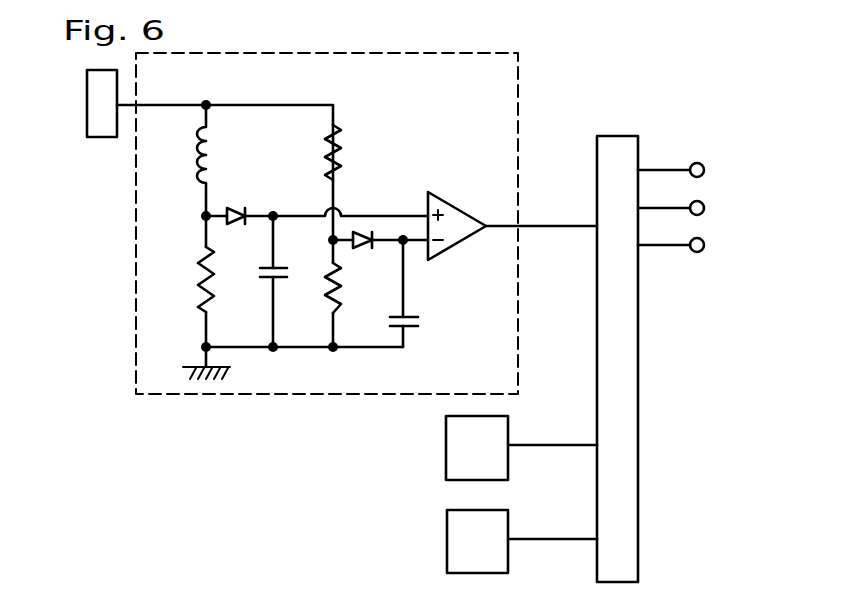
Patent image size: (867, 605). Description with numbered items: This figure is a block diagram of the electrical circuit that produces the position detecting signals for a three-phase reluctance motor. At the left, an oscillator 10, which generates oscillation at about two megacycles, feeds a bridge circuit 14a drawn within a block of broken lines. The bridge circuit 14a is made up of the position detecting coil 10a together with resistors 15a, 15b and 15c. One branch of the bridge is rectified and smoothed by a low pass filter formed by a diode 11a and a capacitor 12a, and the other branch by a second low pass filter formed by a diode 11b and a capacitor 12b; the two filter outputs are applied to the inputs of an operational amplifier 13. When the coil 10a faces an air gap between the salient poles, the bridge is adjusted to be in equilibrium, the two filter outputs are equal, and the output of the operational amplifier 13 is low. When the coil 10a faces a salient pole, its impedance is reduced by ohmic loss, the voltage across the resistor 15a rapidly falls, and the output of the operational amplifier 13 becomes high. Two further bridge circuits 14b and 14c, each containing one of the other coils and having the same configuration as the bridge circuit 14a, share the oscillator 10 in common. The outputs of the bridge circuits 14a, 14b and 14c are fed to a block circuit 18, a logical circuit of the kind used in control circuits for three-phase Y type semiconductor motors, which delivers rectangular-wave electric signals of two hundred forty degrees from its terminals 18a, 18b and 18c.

The oscillator 10 is at (87, 100).
The coil 10a is at (220, 147).
The diode 11a is at (236, 212).
The diode 11b is at (361, 255).
The capacitor 12a is at (261, 276).
The capacitor 12b is at (420, 323).
The operational amplifier 13 is at (460, 208).
The bridge circuit 14a is at (245, 397).
The bridge circuit 14b is at (446, 445).
The bridge circuit 14c is at (447, 539).
The resistor 15a is at (200, 253).
The resistor 15b is at (332, 275).
The resistor 15c is at (345, 153).
The block circuit 18 is at (623, 136).
The terminal 18a is at (703, 165).
The terminal 18b is at (705, 208).
The terminal 18c is at (703, 251).